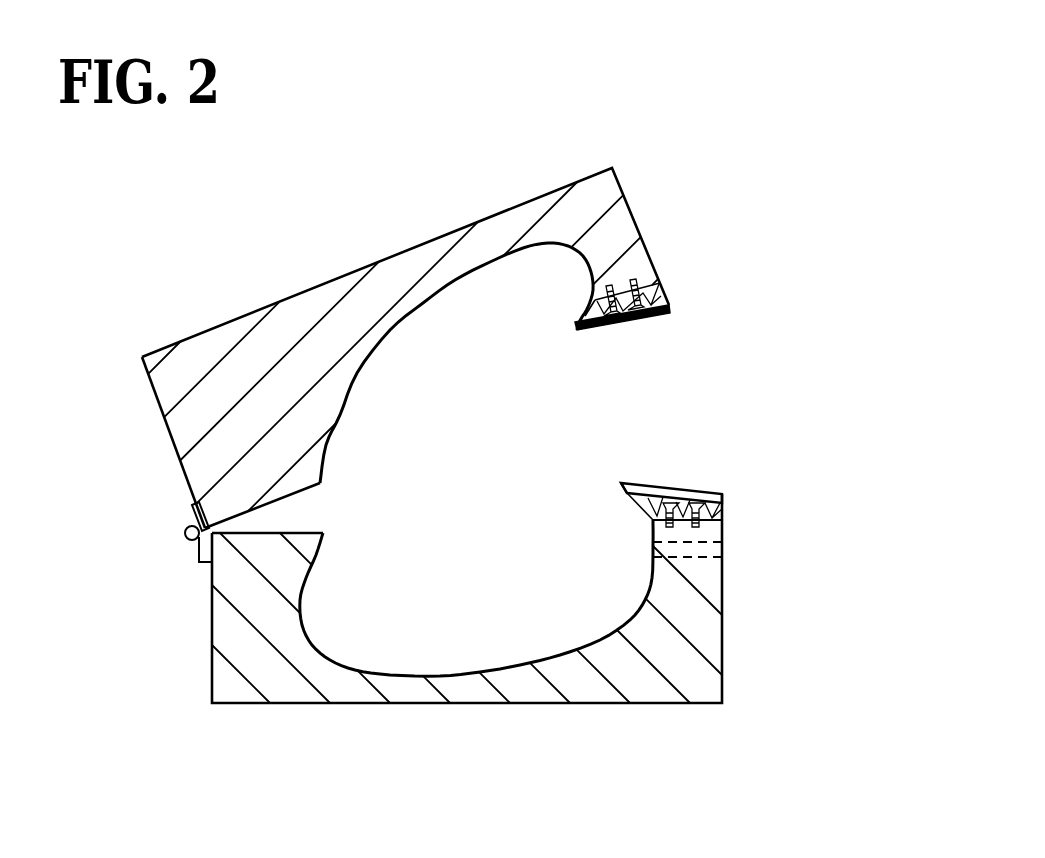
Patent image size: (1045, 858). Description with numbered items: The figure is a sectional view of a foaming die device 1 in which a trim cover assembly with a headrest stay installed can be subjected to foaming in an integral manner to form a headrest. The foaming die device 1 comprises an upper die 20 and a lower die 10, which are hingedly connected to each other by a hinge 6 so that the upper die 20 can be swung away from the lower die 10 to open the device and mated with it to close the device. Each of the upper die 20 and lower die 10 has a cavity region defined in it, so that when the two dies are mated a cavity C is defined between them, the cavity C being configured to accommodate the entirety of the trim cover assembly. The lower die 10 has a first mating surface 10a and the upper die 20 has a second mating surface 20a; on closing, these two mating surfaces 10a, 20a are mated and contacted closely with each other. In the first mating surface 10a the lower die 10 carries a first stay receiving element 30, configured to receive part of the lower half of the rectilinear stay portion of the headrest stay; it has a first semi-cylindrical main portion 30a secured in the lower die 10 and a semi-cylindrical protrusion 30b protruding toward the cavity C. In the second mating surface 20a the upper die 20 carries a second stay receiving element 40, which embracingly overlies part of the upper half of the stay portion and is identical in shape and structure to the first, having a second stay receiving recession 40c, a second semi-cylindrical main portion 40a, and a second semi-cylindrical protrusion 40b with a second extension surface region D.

The foaming die device 1 is at (238, 255).
The hinge 6 is at (184, 531).
The lower die 10 is at (705, 588).
The first mating surface 10a is at (703, 491).
The upper die 20 is at (607, 193).
The second mating surface 20a is at (618, 322).
The first stay receiving element 30 is at (687, 480).
The first semi-cylindrical main portion 30a is at (706, 509).
The semi-cylindrical protrusion 30b is at (637, 500).
The second stay receiving element 40 is at (641, 306).
The second semi-cylindrical main portion 40a is at (650, 290).
The second semi-cylindrical protrusion 40b is at (590, 309).
The second stay receiving recession 40c is at (661, 316).
The cavity C is at (471, 502).
The second extension surface region D is at (577, 333).